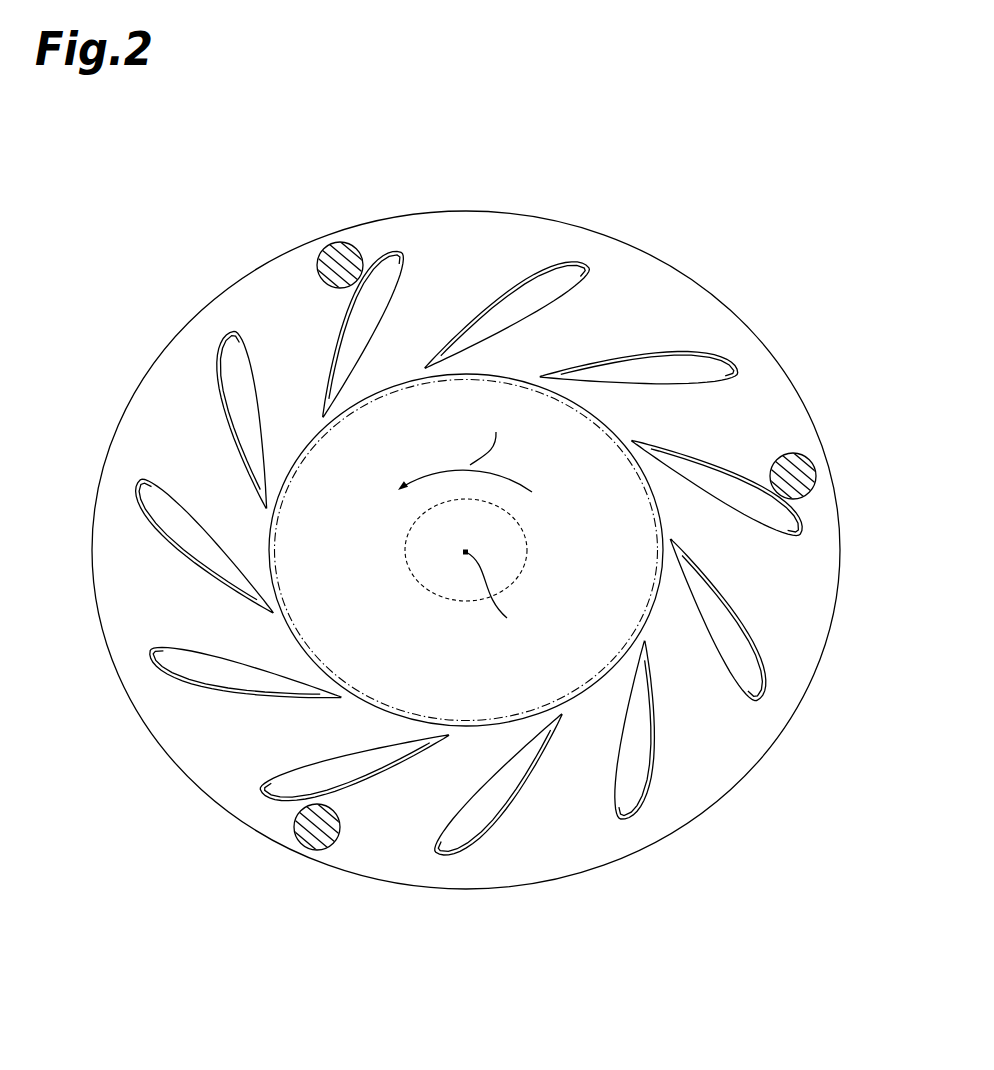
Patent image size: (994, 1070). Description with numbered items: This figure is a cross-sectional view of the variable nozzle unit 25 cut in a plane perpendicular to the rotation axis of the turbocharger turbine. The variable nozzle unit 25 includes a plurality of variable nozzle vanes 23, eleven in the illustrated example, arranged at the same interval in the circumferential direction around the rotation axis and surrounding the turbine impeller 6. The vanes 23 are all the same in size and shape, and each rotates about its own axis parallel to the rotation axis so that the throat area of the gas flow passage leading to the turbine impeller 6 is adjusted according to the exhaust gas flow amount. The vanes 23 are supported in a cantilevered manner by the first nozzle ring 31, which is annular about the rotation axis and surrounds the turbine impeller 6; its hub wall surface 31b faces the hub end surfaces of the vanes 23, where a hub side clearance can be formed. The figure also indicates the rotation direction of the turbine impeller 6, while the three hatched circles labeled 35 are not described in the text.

The turbine impeller 6 is at (290, 628).
The variable nozzle vane 23 is at (526, 272).
The variable nozzle unit 25 is at (477, 555).
The first nozzle ring 31 is at (96, 463).
The hub wall surface 31b is at (477, 550).
The mounting hole 35 is at (327, 255).